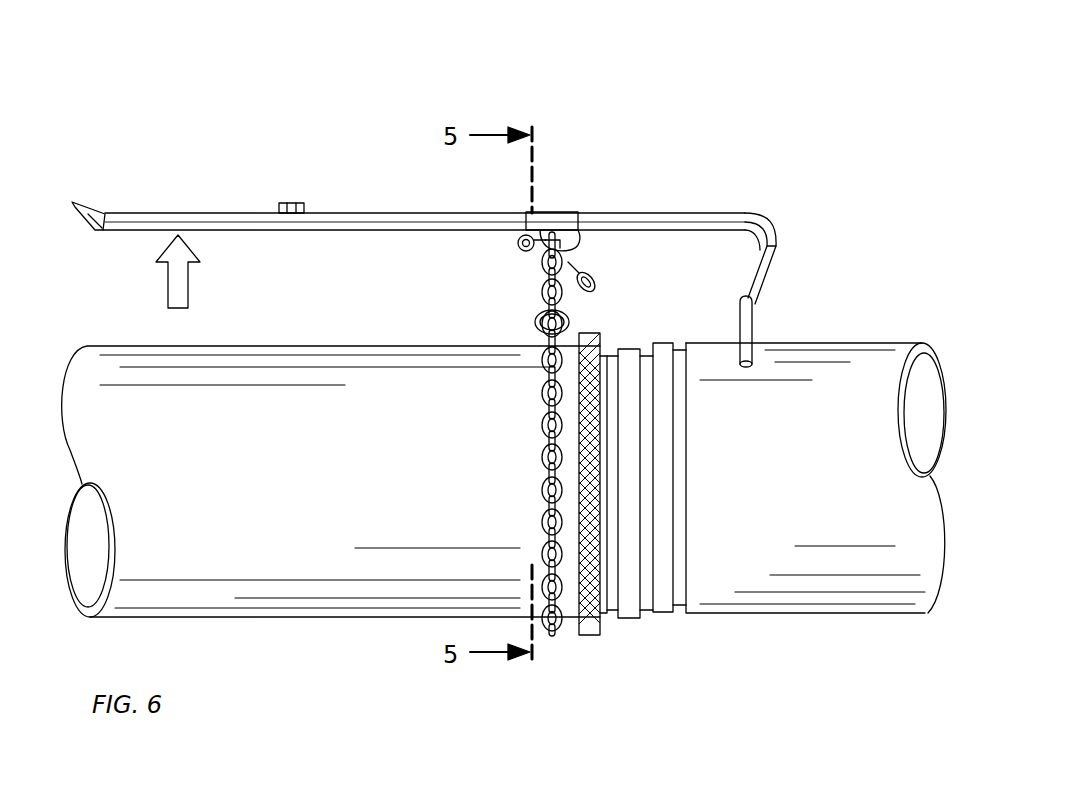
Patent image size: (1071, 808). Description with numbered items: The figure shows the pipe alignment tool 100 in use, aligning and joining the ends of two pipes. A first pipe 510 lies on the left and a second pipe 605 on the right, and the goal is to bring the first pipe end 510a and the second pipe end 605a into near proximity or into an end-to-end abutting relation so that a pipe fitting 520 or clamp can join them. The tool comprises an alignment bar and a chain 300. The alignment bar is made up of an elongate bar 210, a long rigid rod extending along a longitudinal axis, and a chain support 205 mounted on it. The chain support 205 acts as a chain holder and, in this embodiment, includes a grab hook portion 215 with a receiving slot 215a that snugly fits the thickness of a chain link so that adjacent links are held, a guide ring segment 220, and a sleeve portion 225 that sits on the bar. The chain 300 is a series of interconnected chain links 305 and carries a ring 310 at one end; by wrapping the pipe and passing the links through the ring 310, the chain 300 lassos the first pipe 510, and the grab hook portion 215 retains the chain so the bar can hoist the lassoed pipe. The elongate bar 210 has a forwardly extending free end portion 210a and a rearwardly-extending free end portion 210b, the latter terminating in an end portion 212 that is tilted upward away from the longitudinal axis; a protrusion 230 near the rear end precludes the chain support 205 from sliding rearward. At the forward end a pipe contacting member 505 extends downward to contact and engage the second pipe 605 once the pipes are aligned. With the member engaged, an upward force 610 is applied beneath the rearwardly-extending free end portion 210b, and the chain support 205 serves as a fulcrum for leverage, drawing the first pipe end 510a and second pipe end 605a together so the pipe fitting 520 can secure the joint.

The pipe alignment tool 100 is at (677, 140).
The chain support 205 is at (552, 170).
The elongate bar 210 is at (433, 177).
The forwardly extending free end portion 210a is at (783, 208).
The rearwardly-extending free end portion 210b is at (100, 140).
The end portion 212 is at (80, 215).
The grab hook portion 215 is at (590, 240).
The receiving slot 215a is at (522, 240).
The guide ring segment 220 is at (530, 252).
The sleeve portion 225 is at (572, 212).
The protrusion 230 is at (297, 203).
The chain 300 is at (463, 434).
The chain links 305 is at (541, 518).
The ring 310 is at (535, 322).
The pipe contacting member 505 is at (750, 318).
The first pipe 510 is at (237, 330).
The first pipe end 510a is at (560, 648).
The pipe fitting 520 is at (648, 635).
The second pipe 605 is at (895, 325).
The second pipe end 605a is at (722, 635).
The upward force 610 is at (160, 276).